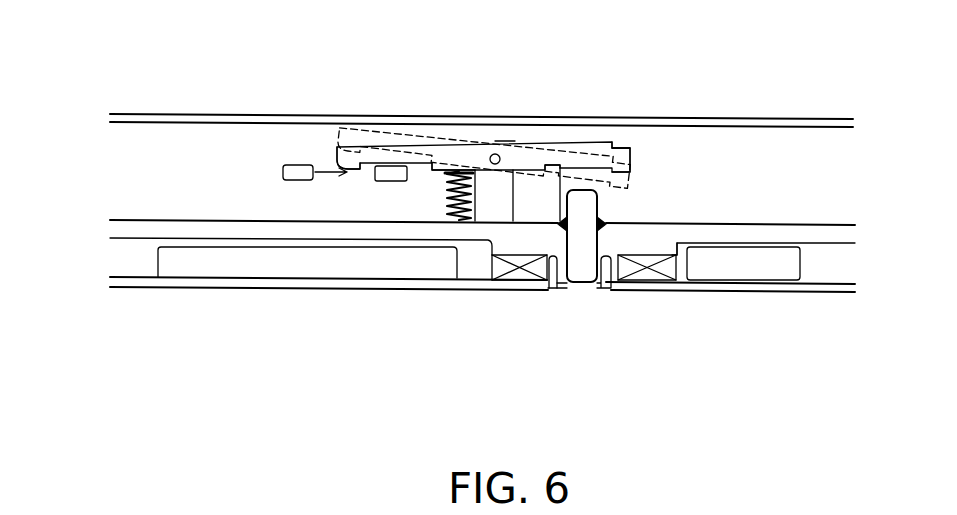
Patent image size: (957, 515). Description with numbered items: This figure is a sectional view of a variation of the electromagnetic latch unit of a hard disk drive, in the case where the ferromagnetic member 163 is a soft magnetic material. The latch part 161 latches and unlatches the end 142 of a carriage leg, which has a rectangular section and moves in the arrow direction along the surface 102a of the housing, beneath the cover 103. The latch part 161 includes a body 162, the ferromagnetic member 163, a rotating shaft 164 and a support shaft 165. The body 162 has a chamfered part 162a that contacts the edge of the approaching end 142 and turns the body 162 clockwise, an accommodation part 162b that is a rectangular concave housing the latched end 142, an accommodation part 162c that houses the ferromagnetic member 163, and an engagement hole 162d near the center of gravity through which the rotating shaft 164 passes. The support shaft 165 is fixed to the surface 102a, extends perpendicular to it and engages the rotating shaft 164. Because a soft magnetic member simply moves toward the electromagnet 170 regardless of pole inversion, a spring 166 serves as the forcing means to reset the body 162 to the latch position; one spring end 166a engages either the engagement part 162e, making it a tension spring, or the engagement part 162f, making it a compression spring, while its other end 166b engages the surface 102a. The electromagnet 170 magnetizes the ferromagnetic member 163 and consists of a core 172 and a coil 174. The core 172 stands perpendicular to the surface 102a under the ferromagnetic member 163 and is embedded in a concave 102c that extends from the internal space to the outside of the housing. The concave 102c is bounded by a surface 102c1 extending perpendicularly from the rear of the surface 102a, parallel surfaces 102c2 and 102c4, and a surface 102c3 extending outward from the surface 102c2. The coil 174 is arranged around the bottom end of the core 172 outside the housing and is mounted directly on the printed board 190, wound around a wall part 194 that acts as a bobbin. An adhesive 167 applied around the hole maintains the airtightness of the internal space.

The cover 103 is at (780, 118).
The surface of the housing 102a is at (110, 220).
The concave 102c is at (622, 228).
The surface 102c1 is at (682, 252).
The surface 102c2 is at (520, 254).
The surface 102c3 is at (553, 284).
The surface 102c4 is at (590, 288).
The end of the leg 142 is at (282, 173).
The latch part 161 is at (186, 153).
The body 162 is at (402, 146).
The chamfered part 162a is at (336, 147).
The accommodation part 162b is at (366, 132).
The accommodation part 162c is at (601, 149).
The engagement hole 162d is at (496, 154).
The engagement part 162e is at (460, 170).
The engagement part 162f is at (561, 148).
The ferromagnetic member 163 is at (630, 156).
The rotating shaft 164 is at (503, 143).
The support shaft 165 is at (517, 197).
The spring 166 is at (462, 212).
The spring seat 166a is at (447, 175).
The other end of the spring 166b is at (460, 218).
The adhesive 167 is at (560, 229).
The electromagnet 170 is at (484, 311).
The core 172 is at (582, 262).
The coil 174 is at (643, 278).
The printed board 190 is at (760, 285).
The wall part 194 is at (551, 257).